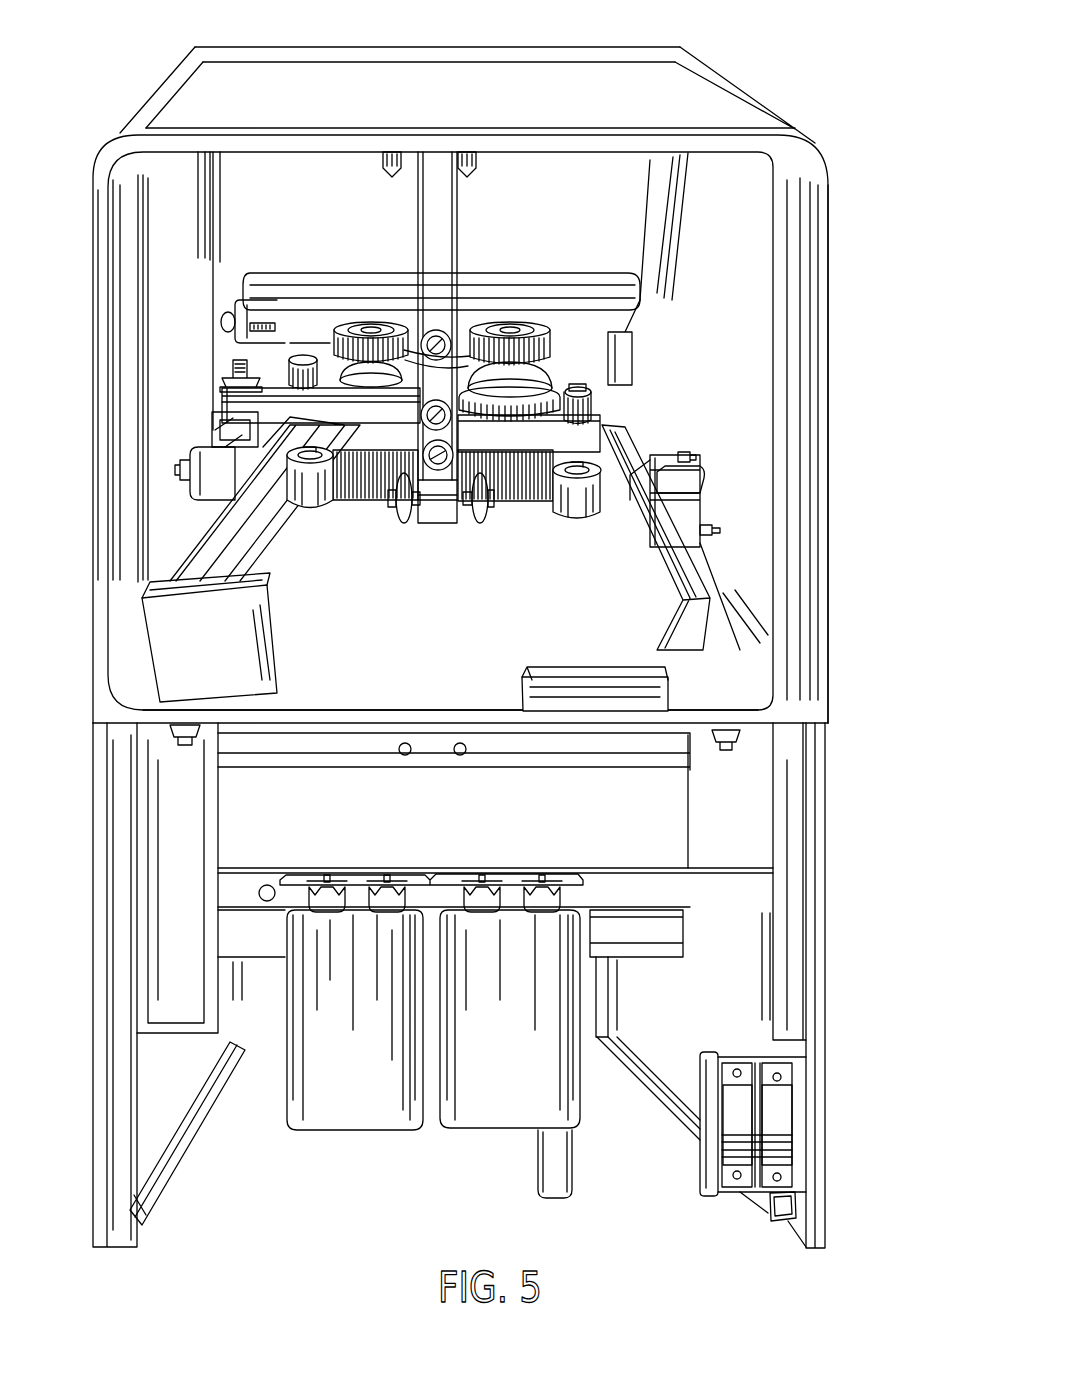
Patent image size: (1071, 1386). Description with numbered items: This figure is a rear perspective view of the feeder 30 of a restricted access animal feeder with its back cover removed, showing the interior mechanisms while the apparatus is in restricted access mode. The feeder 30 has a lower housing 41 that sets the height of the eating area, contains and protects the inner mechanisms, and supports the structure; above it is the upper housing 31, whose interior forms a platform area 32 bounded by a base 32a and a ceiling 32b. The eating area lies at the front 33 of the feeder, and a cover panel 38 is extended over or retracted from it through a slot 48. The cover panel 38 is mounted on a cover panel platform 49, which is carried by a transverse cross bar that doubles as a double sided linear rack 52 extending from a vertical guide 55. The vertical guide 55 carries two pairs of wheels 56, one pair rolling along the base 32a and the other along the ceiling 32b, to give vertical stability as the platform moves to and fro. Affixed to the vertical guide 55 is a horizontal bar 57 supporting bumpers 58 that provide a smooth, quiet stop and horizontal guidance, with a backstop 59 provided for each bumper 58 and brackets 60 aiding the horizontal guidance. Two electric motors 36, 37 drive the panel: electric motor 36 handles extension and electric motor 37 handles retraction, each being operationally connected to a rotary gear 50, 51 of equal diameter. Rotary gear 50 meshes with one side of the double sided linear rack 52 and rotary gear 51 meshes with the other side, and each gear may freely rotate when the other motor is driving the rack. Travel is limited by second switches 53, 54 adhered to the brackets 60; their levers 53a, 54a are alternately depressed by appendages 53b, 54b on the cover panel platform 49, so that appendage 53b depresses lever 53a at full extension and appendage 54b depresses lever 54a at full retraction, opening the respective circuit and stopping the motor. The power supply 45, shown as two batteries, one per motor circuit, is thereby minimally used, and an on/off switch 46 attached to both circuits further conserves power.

The feeder 30 is at (829, 66).
The upper housing 31 is at (830, 203).
The platform area 32 is at (625, 260).
The base 32a is at (760, 707).
The ceiling 32b is at (595, 153).
The front 33 is at (590, 47).
The electric motor 36 is at (357, 495).
The electric motor 37 is at (512, 493).
The cover panel 38 is at (613, 290).
The lower housing 41 is at (825, 893).
The power supply 45 is at (470, 1100).
The on/off switch 46 is at (777, 1180).
The slot 48 is at (240, 300).
The cover panel platform 49 is at (305, 350).
The rotary gear 50 is at (338, 362).
The rotary gear 51 is at (470, 362).
The double sided linear rack 52 is at (385, 325).
The second switch 53 is at (187, 472).
The lever 53a is at (233, 423).
The appendage 53b is at (233, 405).
The second switch 54 is at (702, 513).
The lever 54a is at (703, 485).
The appendage 54b is at (650, 452).
The vertical guide 55 is at (428, 165).
The wheels 56 is at (392, 180).
The horizontal bar 57 is at (360, 448).
The bumper 58 is at (330, 500).
The backstop 59 is at (252, 657).
The bracket 60 is at (247, 562).